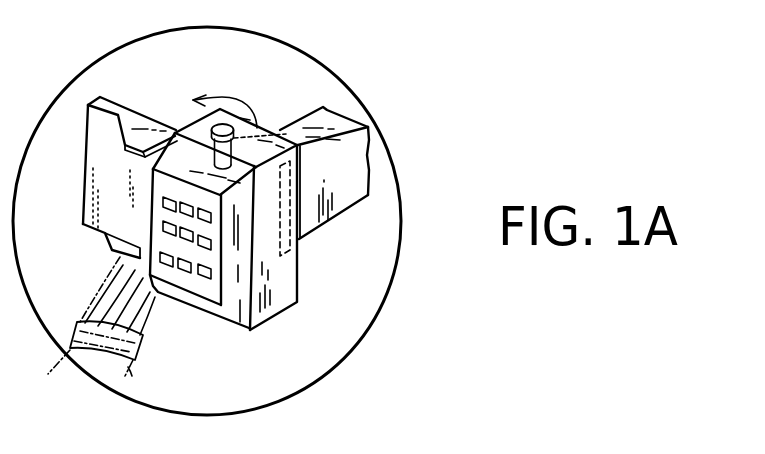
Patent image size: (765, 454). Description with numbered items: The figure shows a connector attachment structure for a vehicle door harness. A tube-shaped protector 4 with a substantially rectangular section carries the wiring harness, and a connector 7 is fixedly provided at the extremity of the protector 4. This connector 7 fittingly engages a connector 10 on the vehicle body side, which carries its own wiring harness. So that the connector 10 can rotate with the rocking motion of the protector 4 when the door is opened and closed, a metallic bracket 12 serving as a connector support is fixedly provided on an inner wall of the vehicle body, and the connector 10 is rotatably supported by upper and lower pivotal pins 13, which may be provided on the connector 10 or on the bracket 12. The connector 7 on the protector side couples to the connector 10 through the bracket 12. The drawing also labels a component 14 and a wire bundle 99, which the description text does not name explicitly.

The protector 4 is at (347, 207).
The connector 7 is at (300, 258).
The connector 10 is at (153, 187).
The bracket 12 is at (270, 318).
The pivotal pins 13 is at (225, 130).
The connector 14 is at (150, 296).
The wire harness 99 is at (133, 377).